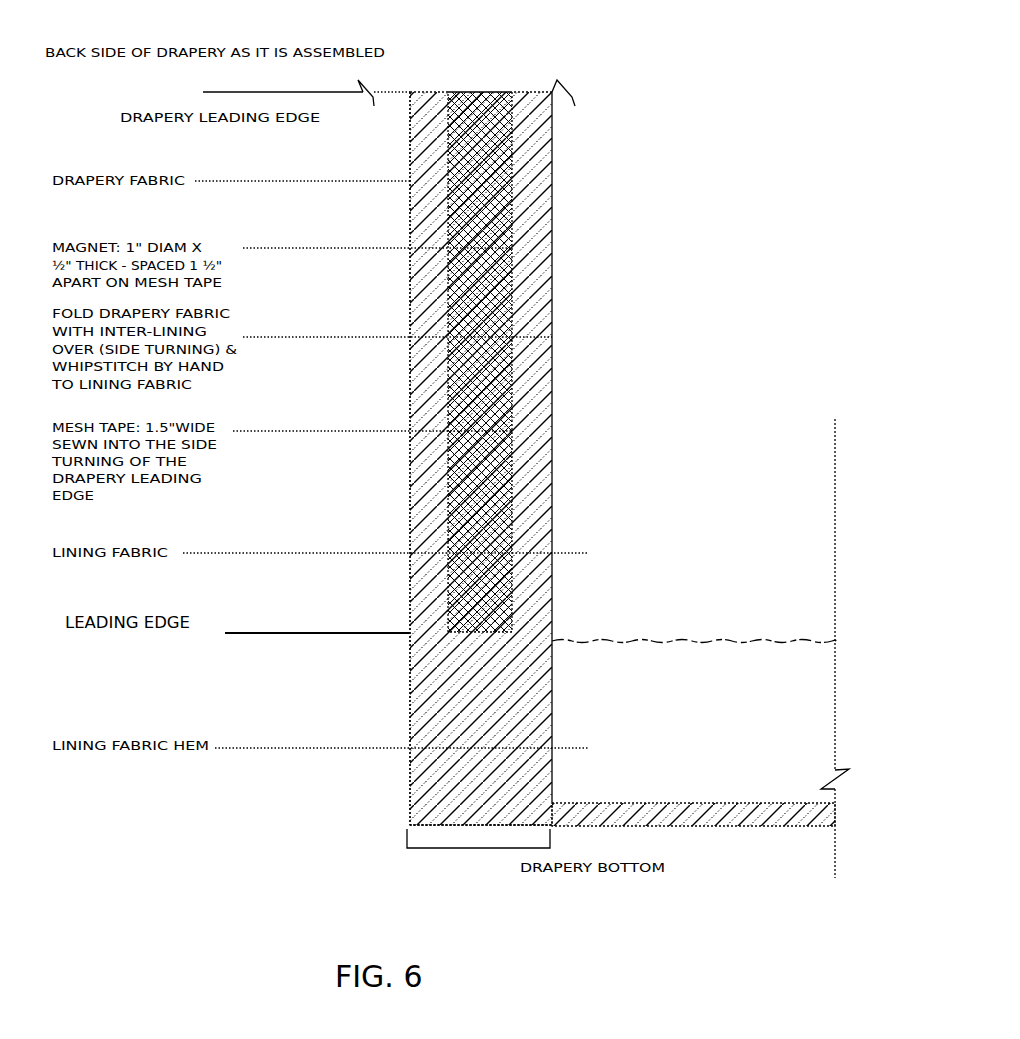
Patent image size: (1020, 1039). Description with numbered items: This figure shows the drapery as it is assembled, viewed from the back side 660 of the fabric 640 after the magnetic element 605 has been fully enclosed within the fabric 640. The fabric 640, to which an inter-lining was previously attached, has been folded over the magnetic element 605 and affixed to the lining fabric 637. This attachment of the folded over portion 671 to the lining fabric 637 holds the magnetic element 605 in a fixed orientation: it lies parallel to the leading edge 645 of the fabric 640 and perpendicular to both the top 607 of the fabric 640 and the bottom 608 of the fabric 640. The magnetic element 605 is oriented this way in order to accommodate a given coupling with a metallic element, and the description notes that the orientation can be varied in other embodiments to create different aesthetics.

The back side 660 is at (470, 39).
The magnetic element 605 is at (478, 73).
The top of the fabric 607 is at (575, 93).
The fabric 640 is at (412, 153).
The lining fabric 637 is at (576, 447).
The leading edge 645 is at (317, 622).
The bottom of the fabric 608 is at (406, 802).
The folded over portion 671 is at (437, 848).